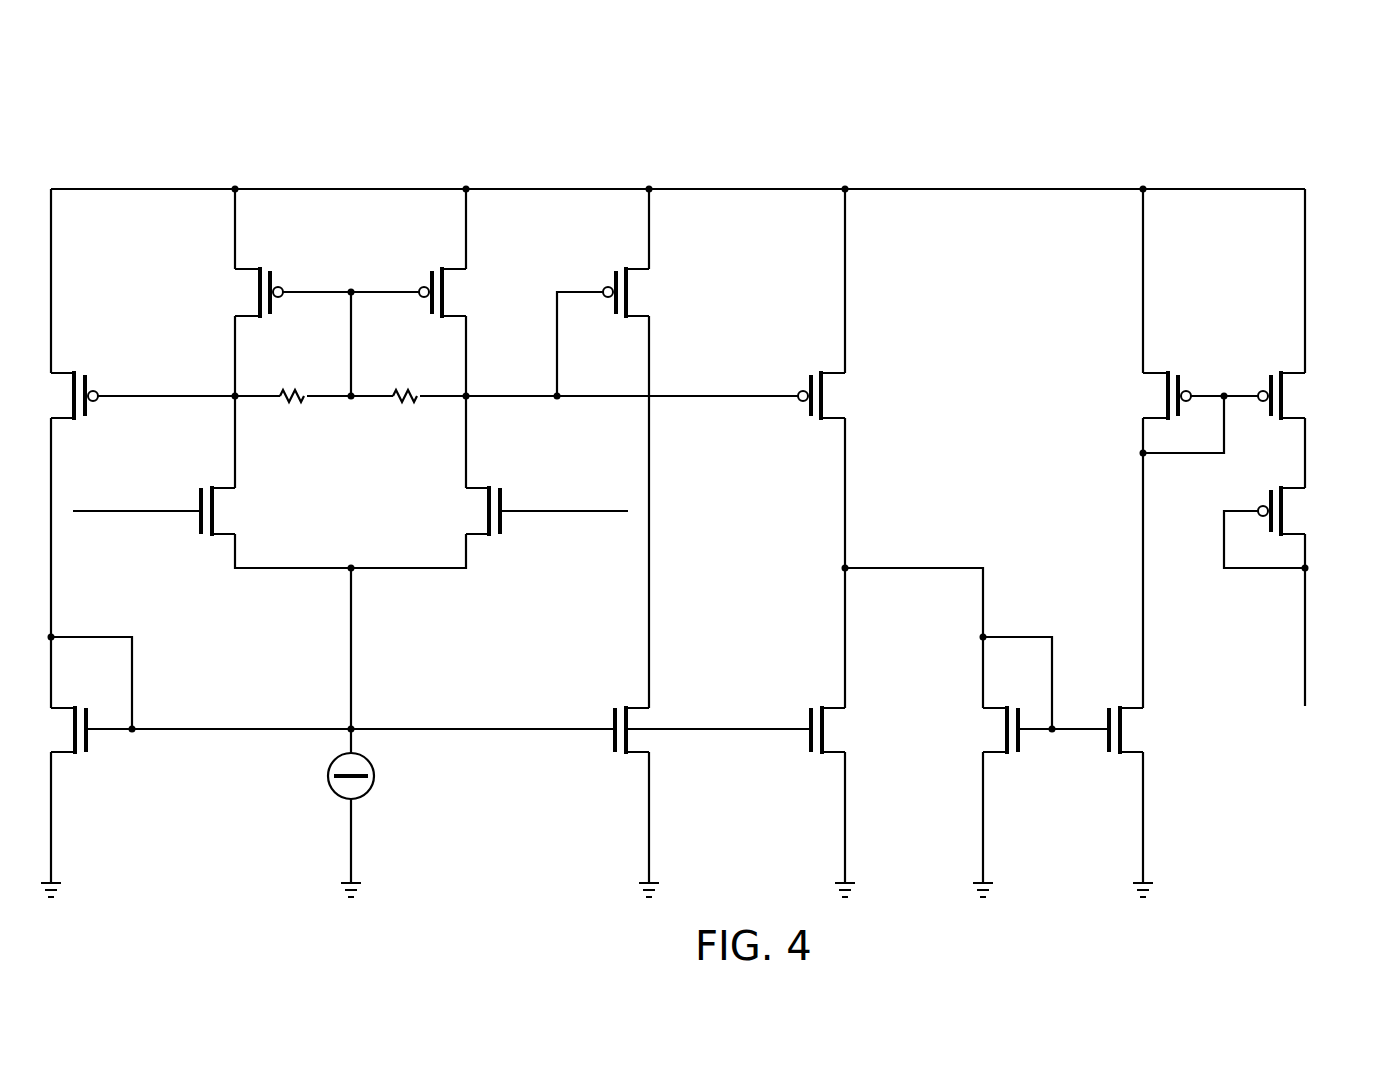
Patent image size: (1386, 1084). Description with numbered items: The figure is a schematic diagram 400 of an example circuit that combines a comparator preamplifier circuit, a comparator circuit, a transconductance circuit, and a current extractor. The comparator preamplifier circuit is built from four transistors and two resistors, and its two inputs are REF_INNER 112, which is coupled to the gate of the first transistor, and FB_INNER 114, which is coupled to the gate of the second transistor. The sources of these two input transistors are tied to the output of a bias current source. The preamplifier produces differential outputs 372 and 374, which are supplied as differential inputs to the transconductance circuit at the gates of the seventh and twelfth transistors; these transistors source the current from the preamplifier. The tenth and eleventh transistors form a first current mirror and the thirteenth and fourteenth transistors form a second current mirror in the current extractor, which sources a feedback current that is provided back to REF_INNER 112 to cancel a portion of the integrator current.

The schematic diagram 400 is at (338, 108).
The differential output 372 is at (160, 401).
The differential output 374 is at (766, 395).
The REF_INNER 112 is at (128, 515).
The FB_INNER 114 is at (557, 514).